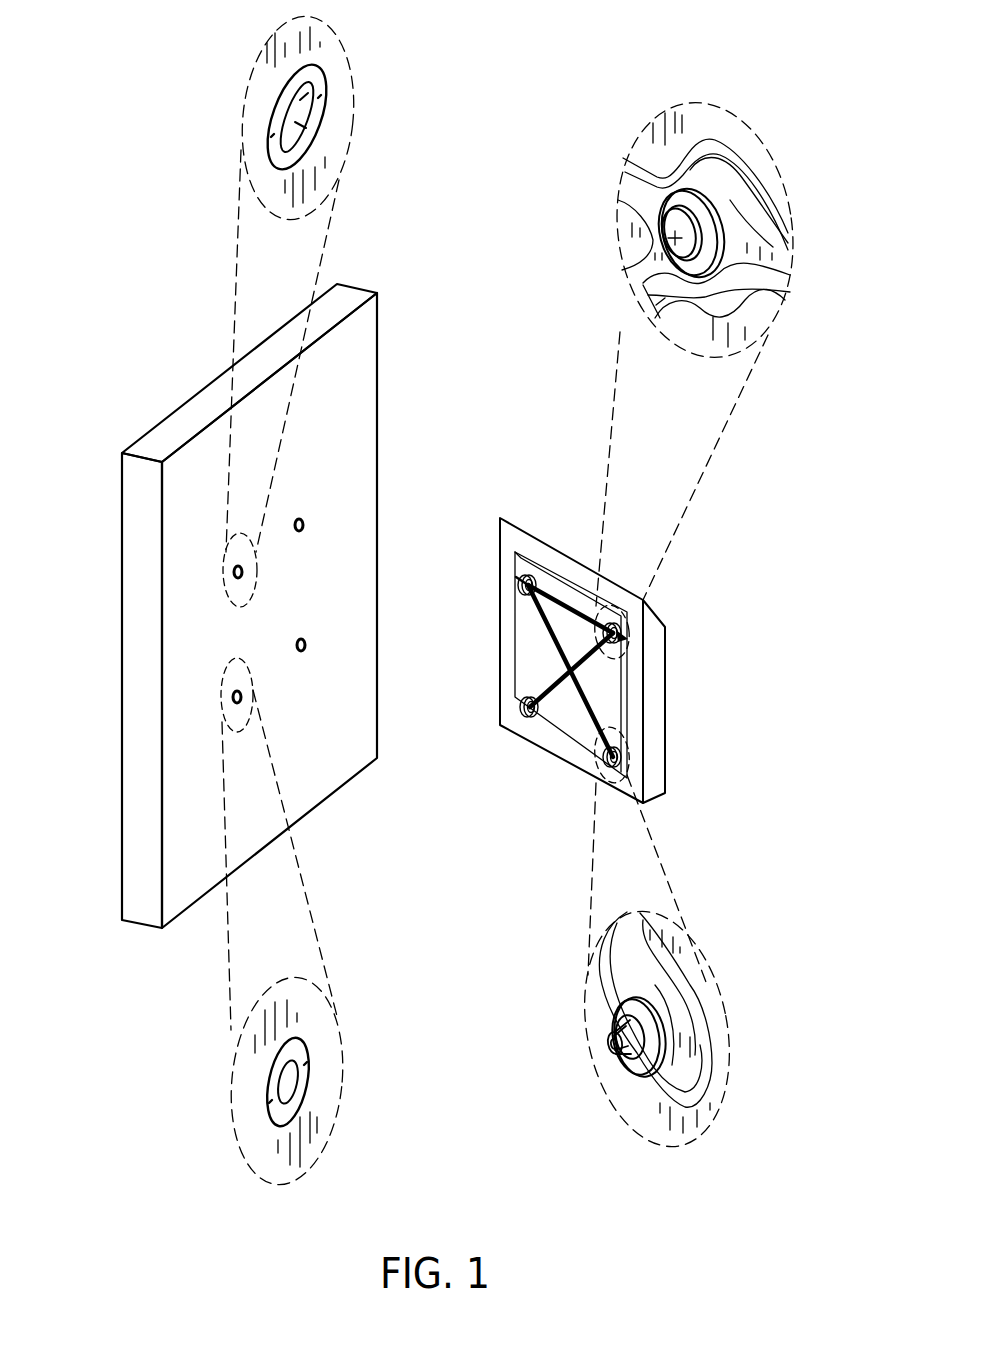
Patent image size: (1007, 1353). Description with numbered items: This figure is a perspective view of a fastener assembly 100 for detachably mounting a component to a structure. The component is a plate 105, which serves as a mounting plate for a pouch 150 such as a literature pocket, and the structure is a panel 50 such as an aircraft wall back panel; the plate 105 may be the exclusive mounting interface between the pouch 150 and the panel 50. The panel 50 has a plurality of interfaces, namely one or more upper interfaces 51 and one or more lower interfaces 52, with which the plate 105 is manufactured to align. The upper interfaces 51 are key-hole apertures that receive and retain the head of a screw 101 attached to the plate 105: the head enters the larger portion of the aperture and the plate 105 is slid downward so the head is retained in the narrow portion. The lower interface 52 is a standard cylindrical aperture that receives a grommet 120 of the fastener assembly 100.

The panel 50 is at (172, 428).
The upper interface 51 is at (262, 108).
The lower interface 52 is at (305, 645).
The fastener assembly 100 is at (598, 1017).
The screw 101 is at (654, 208).
The plate 105 is at (567, 708).
The grommet 120 is at (615, 1047).
The pouch 150 is at (698, 720).